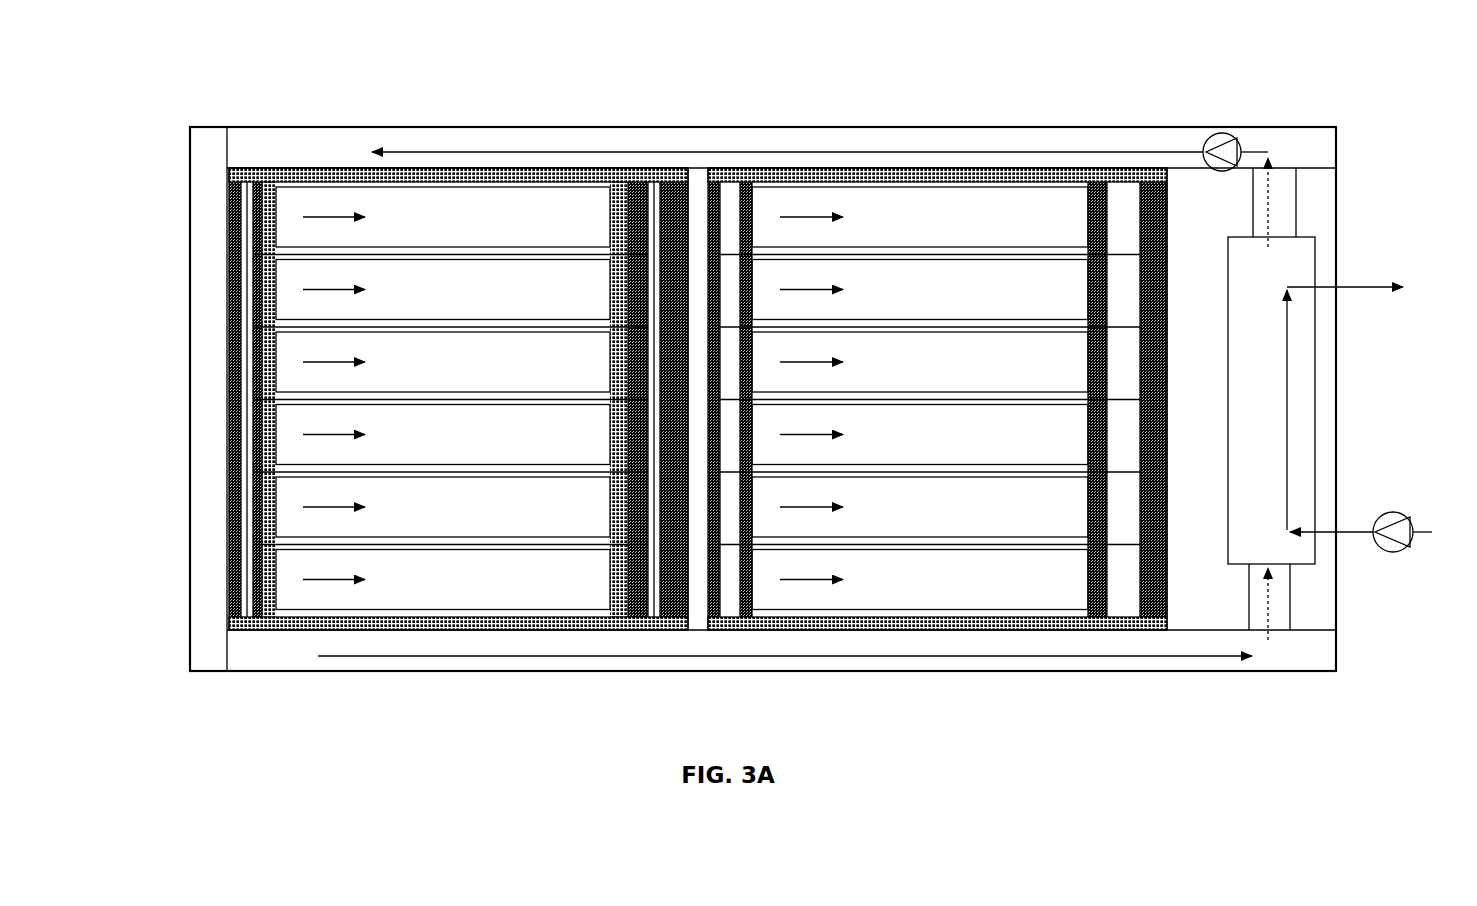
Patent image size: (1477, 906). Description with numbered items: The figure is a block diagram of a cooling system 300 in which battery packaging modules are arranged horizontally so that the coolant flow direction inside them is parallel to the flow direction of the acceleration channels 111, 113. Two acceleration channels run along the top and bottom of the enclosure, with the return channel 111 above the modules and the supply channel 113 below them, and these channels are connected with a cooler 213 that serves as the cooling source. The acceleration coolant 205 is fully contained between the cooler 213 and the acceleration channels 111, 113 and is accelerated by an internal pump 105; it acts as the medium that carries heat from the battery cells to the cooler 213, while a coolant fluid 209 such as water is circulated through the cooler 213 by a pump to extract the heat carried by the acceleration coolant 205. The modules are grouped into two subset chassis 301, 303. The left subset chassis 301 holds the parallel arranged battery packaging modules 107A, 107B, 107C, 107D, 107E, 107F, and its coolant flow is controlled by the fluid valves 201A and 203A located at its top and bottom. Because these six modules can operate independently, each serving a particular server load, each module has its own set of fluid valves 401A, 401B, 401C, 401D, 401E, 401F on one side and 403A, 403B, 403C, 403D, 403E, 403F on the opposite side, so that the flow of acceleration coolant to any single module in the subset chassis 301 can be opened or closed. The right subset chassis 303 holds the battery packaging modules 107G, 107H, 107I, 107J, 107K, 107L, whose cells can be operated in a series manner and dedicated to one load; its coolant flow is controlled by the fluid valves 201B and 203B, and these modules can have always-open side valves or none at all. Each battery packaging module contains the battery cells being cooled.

The cooling system 300 is at (782, 352).
The fluid valve 201A is at (330, 172).
The fluid valve 201B is at (822, 168).
The fluid valve 203A is at (285, 632).
The fluid valve 203B is at (770, 631).
The acceleration channel 111 is at (499, 147).
The acceleration channel 113 is at (363, 660).
The internal pump 105 is at (1218, 137).
The acceleration coolant 205 is at (1326, 163).
The cooler 213 is at (1238, 553).
The coolant fluid 209 is at (1369, 517).
The subset chassis 301 is at (678, 593).
The subset chassis 303 is at (1160, 600).
The fluid valve 401A is at (248, 237).
The fluid valve 401B is at (248, 307).
The fluid valve 401C is at (248, 379).
The fluid valve 401D is at (248, 451).
The fluid valve 401E is at (248, 521).
The fluid valve 401F is at (248, 593).
The fluid valve 403A is at (653, 212).
The fluid valve 403B is at (653, 283).
The fluid valve 403C is at (653, 355).
The fluid valve 403D is at (653, 428).
The fluid valve 403E is at (653, 498).
The fluid valve 403F is at (653, 570).
The battery packaging module 107A is at (392, 232).
The battery packaging module 107B is at (392, 304).
The battery packaging module 107C is at (392, 377).
The battery packaging module 107D is at (392, 450).
The battery packaging module 107E is at (392, 522).
The battery packaging module 107F is at (392, 594).
The battery packaging module 107G is at (955, 232).
The battery packaging module 107H is at (955, 304).
The battery packaging module 107I is at (946, 377).
The battery packaging module 107J is at (948, 450).
The battery packaging module 107K is at (955, 522).
The battery packaging module 107L is at (952, 594).